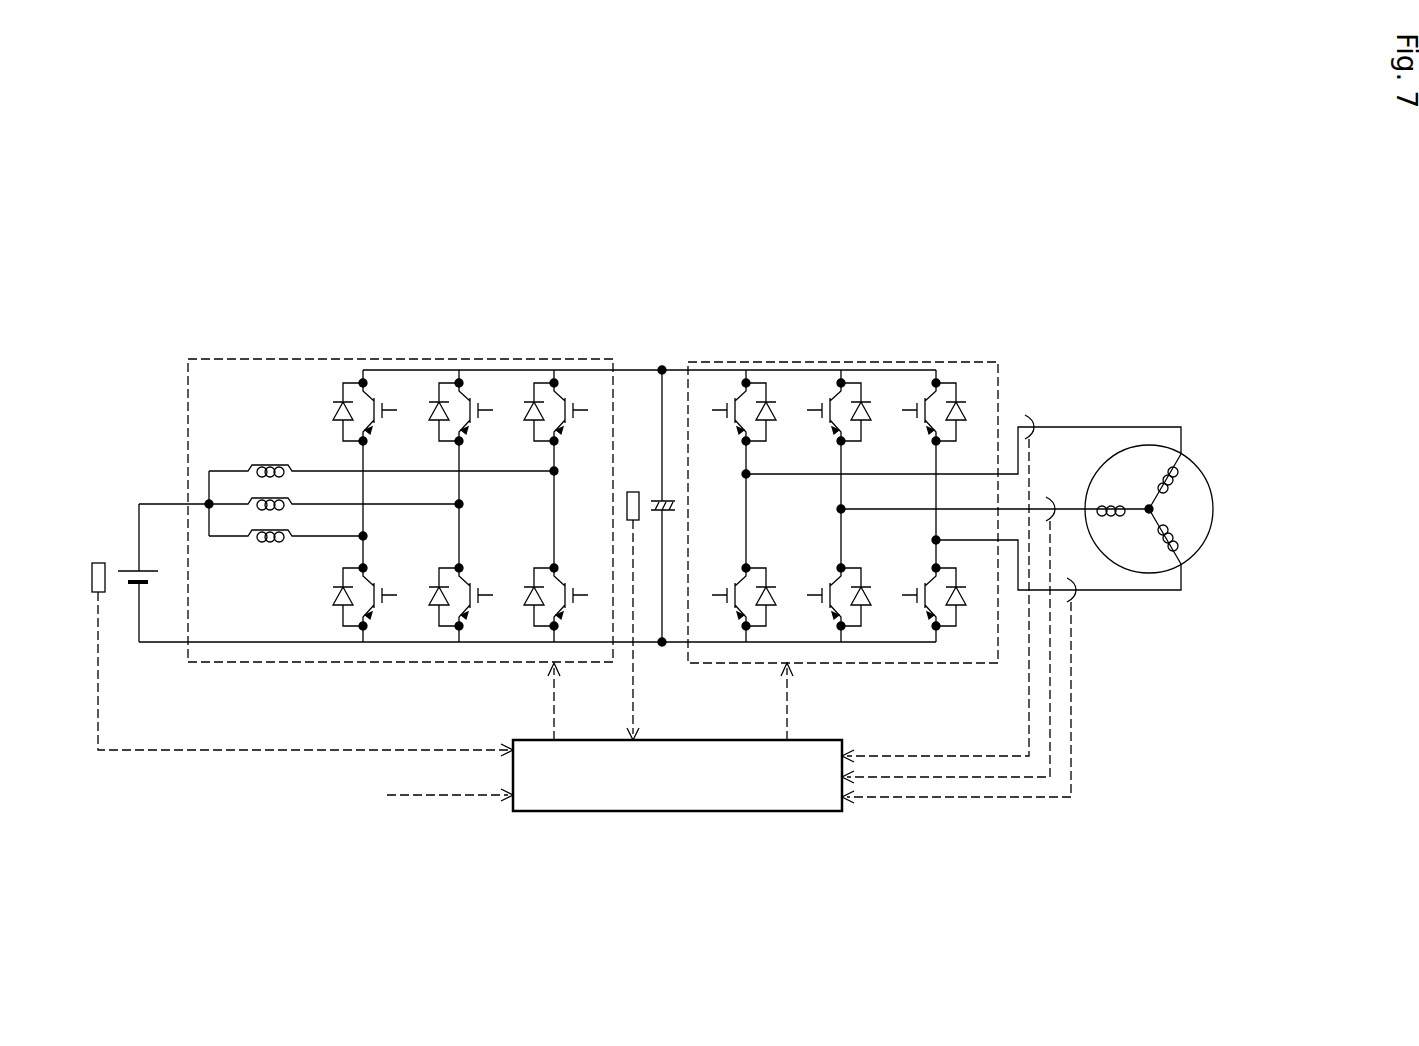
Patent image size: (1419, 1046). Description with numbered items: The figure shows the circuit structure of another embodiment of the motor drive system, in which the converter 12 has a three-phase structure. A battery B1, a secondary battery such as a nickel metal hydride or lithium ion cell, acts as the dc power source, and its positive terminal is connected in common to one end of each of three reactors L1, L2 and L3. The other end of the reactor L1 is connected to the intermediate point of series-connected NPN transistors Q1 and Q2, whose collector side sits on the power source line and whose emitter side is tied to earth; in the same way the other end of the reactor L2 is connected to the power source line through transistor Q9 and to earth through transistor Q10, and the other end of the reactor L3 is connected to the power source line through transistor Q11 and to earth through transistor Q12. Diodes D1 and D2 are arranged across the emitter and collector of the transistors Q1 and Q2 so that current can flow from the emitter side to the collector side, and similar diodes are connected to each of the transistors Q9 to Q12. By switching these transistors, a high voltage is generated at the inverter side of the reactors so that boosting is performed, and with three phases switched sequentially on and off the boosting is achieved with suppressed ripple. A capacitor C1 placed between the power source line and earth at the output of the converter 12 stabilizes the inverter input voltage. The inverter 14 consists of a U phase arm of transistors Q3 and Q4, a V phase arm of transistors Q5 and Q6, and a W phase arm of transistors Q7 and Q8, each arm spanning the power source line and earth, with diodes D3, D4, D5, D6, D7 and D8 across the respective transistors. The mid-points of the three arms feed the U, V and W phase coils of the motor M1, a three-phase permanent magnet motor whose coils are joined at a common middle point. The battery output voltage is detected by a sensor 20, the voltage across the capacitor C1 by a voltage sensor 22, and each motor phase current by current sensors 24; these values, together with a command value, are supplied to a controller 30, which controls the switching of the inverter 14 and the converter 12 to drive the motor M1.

The converter 12 is at (388, 358).
The inverter 14 is at (900, 362).
The transistor (battery voltage sensor) 20 is at (98, 563).
The voltage sensor 22 is at (633, 491).
The current sensors 24 is at (1025, 415).
The controller 30 is at (625, 813).
The battery B1 is at (145, 573).
The capacitor C1 is at (665, 500).
The motor M1 is at (1180, 458).
The reactor L1 is at (288, 525).
The reactor L2 is at (336, 493).
The reactor L3 is at (383, 459).
The NPN transistor Q1 is at (383, 409).
The NPN transistor Q2 is at (383, 594).
The NPN transistor Q3 is at (724, 409).
The NPN transistor Q4 is at (727, 594).
The NPN transistor Q5 is at (819, 409).
The NPN transistor Q6 is at (820, 594).
The NPN transistor Q7 is at (914, 409).
The NPN transistor Q8 is at (915, 594).
The transistor Q9 is at (479, 409).
The transistor Q10 is at (486, 594).
The transistor Q11 is at (580, 409).
The transistor Q12 is at (580, 594).
The diode D1 is at (328, 412).
The diode D2 is at (328, 597).
The diode D3 is at (779, 417).
The diode D4 is at (775, 603).
The diode D5 is at (874, 417).
The diode D6 is at (868, 603).
The diode D7 is at (969, 417).
The diode D8 is at (964, 603).